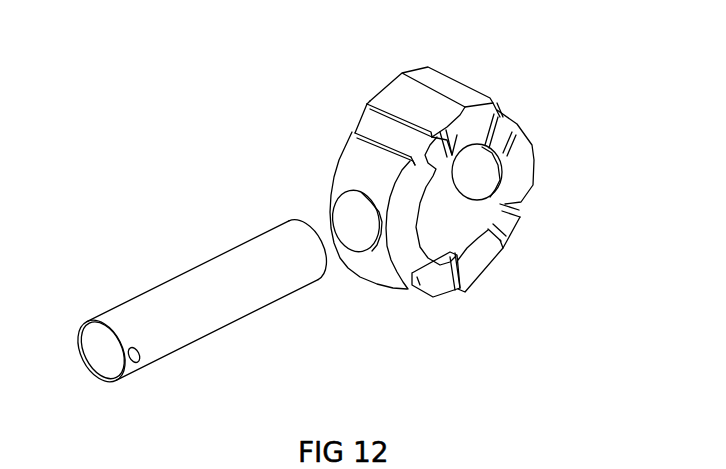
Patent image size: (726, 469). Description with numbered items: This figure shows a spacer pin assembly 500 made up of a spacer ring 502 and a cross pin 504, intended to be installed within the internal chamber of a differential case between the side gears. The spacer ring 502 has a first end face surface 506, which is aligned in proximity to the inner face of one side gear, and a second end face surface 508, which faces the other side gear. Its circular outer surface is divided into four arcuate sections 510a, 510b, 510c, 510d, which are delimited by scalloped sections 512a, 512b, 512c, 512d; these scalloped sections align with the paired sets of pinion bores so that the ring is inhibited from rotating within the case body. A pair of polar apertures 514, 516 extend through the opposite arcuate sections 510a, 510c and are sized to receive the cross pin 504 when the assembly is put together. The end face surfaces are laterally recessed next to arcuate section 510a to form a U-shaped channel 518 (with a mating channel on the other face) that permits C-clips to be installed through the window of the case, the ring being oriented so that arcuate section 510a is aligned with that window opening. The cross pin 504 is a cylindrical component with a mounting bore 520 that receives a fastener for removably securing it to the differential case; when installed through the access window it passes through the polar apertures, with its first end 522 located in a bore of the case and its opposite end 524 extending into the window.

The spacer pin assembly 500 is at (160, 70).
The spacer ring 502 is at (449, 202).
The cross pin 504 is at (241, 255).
The first end face surface 506 is at (512, 190).
The second end face surface 508 is at (408, 85).
The arcuate section 510a is at (304, 139).
The arcuate section 510b is at (482, 97).
The arcuate section 510c is at (566, 174).
The arcuate section 510d is at (522, 288).
The scalloped section 512a is at (365, 115).
The scalloped section 512b is at (540, 112).
The scalloped section 512c is at (546, 267).
The scalloped section 512d is at (478, 306).
The polar aperture 514 is at (354, 263).
The polar aperture 516 is at (517, 205).
The U-shaped channel 518 is at (427, 312).
The mounting bore 520 is at (270, 249).
The first end 522 is at (203, 246).
The opposite end 524 is at (101, 323).